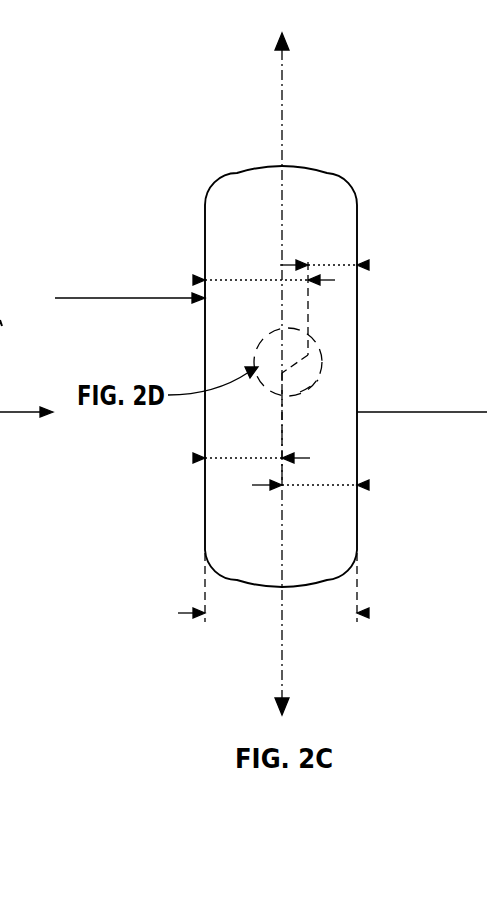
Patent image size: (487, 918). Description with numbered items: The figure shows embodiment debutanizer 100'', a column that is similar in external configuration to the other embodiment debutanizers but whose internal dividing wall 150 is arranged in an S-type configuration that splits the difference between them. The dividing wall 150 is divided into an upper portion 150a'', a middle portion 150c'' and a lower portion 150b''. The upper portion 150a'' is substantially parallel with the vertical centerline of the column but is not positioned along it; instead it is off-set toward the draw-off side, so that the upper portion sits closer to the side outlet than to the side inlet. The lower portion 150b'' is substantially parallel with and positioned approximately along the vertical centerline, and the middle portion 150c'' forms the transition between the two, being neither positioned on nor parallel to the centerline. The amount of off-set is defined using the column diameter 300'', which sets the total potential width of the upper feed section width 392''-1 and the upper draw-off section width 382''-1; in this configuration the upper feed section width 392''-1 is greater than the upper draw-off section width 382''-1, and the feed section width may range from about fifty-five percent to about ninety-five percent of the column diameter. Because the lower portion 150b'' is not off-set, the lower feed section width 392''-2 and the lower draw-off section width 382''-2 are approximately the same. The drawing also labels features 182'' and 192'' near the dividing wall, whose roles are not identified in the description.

The debutanizer 100'' is at (218, 352).
The dividing wall 150 is at (329, 344).
The upper portion of dividing wall 150a'' is at (394, 266).
The lower portion of dividing wall 150b'' is at (361, 430).
The middle portion of dividing wall 150c'' is at (203, 337).
The outlet region 182'' is at (377, 371).
The lower chamber 192'' is at (166, 420).
The column diameter 300'' is at (315, 599).
The upper draw-off section width 382''-1 is at (211, 265).
The lower draw-off section width 382''-2 is at (199, 470).
The upper feed section width 392''-1 is at (377, 249).
The lower feed section width 392''-2 is at (363, 501).